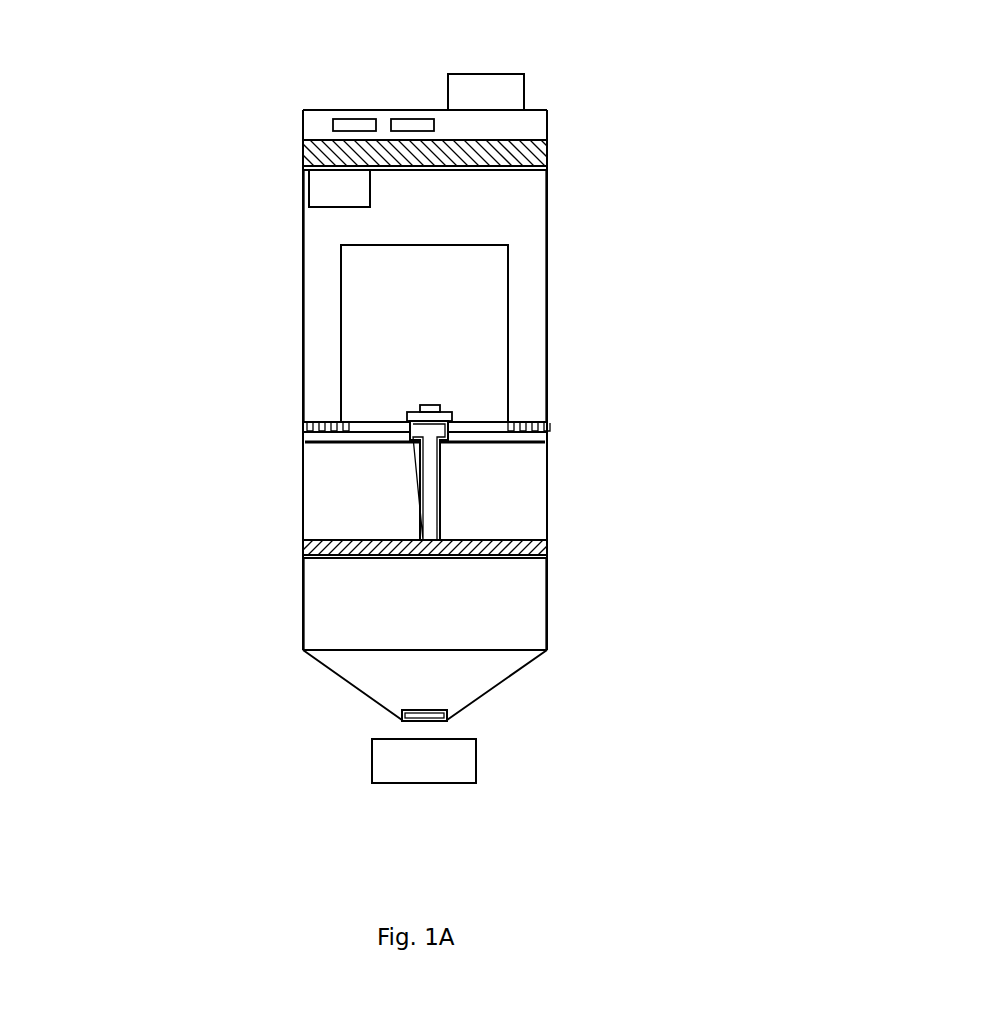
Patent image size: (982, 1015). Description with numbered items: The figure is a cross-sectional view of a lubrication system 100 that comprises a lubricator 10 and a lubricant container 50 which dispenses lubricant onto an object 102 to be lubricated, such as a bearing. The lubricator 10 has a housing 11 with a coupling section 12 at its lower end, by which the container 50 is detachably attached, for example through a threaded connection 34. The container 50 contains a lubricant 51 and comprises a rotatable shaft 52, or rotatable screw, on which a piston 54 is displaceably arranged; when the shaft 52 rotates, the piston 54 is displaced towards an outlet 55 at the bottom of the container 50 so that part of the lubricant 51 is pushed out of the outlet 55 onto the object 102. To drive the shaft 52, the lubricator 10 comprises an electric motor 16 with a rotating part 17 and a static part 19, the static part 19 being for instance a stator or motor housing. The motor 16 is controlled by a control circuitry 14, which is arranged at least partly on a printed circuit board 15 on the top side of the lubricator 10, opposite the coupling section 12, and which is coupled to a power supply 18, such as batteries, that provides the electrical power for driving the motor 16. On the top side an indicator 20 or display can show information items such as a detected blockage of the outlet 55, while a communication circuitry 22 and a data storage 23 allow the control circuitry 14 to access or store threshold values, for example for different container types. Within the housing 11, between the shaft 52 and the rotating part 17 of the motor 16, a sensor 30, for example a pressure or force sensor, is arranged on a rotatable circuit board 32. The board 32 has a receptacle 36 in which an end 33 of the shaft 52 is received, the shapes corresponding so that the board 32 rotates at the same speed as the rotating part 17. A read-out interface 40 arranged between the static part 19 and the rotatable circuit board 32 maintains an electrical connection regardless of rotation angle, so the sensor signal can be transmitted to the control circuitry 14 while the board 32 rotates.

The lubrication system 100 is at (633, 28).
The lubricator 10 is at (250, 105).
The housing 11 is at (547, 275).
The coupling section 12 is at (296, 443).
The control circuitry 14 is at (513, 142).
The printed circuit board 15 is at (547, 152).
The electric motor 16 is at (548, 343).
The rotating part 17 is at (456, 318).
The power supply 18 is at (312, 189).
The static part 19 is at (521, 196).
The indicator 20 is at (497, 72).
The communication circuitry 22 is at (347, 115).
The data storage 23 is at (405, 115).
The sensor 30 is at (425, 403).
The rotatable circuit board 32 is at (360, 446).
The end of the rotatable shaft 33 is at (415, 443).
The threaded connection 34 is at (303, 424).
The receptacle 36 is at (448, 439).
The read-out interface 40 is at (320, 408).
The lubricant container 50 is at (296, 554).
The lubricant 51 is at (518, 610).
The rotatable shaft 52 is at (433, 487).
The piston 54 is at (546, 547).
The outlet 55 is at (439, 706).
The object 102 is at (479, 760).